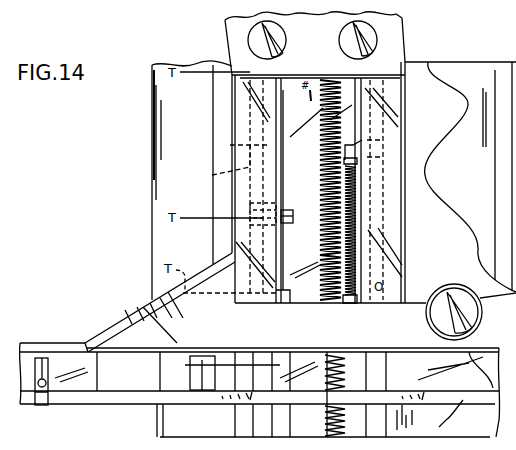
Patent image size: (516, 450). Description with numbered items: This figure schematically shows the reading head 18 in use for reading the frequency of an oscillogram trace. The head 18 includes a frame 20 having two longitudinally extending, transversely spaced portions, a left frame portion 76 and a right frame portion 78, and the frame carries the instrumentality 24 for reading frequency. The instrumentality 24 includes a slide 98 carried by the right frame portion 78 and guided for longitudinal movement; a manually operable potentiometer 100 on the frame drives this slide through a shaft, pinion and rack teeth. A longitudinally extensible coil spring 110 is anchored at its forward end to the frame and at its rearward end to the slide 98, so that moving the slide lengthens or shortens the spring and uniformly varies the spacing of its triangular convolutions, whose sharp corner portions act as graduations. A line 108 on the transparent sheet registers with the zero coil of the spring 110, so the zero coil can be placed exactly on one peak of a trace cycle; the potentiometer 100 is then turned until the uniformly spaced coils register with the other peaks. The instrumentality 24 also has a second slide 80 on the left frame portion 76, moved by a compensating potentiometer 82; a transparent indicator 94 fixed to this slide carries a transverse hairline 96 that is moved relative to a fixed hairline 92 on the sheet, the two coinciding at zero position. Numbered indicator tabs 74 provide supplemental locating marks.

The reading head 18 is at (410, 54).
The frame 20 is at (152, 296).
The instrumentality for reading frequency 24 is at (382, 235).
The indicator tab 74 is at (47, 408).
The left frame portion 76 is at (235, 118).
The right frame portion 78 is at (398, 116).
The second slide 80 is at (228, 164).
The potentiometer 82 is at (247, 40).
The hairline 92 is at (283, 305).
The transparent indicator 94 is at (287, 212).
The hairline 96 is at (287, 223).
The slide 98 is at (400, 147).
The potentiometer 100 is at (378, 40).
The line 108 is at (344, 303).
The coil spring 110 is at (357, 222).